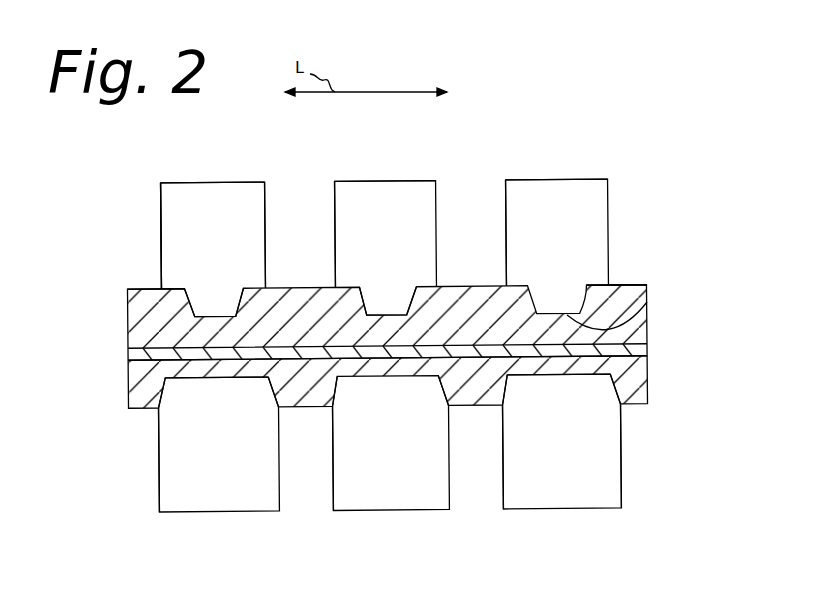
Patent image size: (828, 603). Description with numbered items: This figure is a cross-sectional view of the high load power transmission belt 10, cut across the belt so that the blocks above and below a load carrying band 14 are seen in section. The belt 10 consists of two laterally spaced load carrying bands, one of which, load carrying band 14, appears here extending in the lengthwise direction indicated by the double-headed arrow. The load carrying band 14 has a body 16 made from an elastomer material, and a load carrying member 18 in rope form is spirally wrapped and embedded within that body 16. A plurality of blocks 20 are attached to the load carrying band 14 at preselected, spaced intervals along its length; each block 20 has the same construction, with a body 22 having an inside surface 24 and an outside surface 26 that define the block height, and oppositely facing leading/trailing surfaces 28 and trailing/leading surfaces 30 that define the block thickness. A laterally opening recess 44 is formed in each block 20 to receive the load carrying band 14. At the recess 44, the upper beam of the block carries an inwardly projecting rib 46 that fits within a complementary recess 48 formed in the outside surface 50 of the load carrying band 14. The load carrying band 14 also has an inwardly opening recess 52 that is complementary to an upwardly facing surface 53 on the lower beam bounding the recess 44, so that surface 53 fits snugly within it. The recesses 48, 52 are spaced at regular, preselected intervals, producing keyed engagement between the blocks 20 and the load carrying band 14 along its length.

The power transmission belt 10 is at (670, 110).
The load carrying band 14 is at (635, 278).
The body 16 is at (206, 317).
The load carrying member 18 is at (647, 345).
The block 20 is at (230, 183).
The body 22 is at (187, 192).
The inside surface 24 is at (186, 512).
The outside surface 26 is at (195, 183).
The leading/trailing surface 28 is at (162, 204).
The trailing/leading surface 30 is at (267, 237).
The recess 44 is at (192, 304).
The rib 46 is at (647, 302).
The recess 48 is at (375, 287).
The outside surface 50 is at (144, 289).
The recess 52 is at (208, 377).
The upwardly facing surface 53 is at (393, 362).